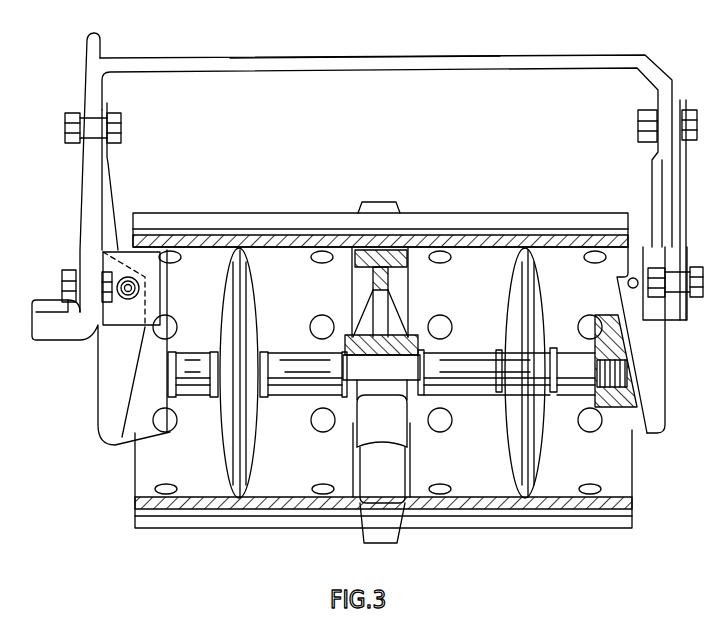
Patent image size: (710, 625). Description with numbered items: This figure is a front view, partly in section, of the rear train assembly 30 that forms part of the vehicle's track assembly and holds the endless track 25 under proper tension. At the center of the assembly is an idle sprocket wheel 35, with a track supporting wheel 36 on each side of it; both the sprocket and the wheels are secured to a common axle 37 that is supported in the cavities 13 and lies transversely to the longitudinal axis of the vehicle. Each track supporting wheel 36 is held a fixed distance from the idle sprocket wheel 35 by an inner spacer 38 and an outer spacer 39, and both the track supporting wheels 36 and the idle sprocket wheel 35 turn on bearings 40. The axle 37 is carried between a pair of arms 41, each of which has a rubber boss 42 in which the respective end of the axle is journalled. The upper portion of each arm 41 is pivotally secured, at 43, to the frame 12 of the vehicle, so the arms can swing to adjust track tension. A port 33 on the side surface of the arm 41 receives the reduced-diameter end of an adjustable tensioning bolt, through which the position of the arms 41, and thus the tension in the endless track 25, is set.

The frame 12 is at (393, 63).
The cavities 13 is at (238, 77).
The endless track 25 is at (477, 220).
The rear train assembly 30 is at (248, 569).
The port 33 is at (627, 283).
The idle sprocket wheel 35 is at (393, 535).
The track supporting wheel 36 is at (253, 468).
The axle 37 is at (578, 365).
The inner spacer 38 is at (288, 382).
The outer spacer 39 is at (192, 380).
The bearings 40 is at (350, 335).
The arms 41 is at (102, 418).
The rubber boss 42 is at (150, 428).
The pivotal securement 43 is at (127, 130).